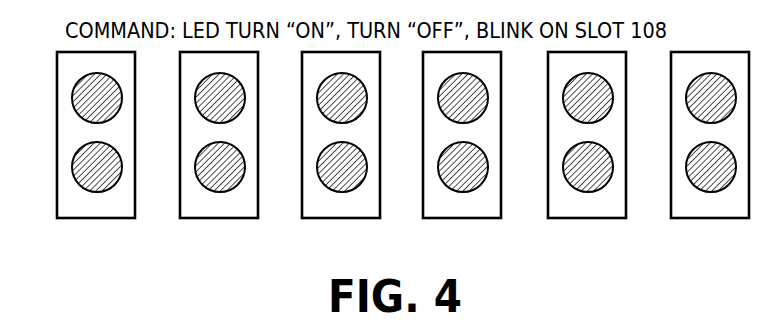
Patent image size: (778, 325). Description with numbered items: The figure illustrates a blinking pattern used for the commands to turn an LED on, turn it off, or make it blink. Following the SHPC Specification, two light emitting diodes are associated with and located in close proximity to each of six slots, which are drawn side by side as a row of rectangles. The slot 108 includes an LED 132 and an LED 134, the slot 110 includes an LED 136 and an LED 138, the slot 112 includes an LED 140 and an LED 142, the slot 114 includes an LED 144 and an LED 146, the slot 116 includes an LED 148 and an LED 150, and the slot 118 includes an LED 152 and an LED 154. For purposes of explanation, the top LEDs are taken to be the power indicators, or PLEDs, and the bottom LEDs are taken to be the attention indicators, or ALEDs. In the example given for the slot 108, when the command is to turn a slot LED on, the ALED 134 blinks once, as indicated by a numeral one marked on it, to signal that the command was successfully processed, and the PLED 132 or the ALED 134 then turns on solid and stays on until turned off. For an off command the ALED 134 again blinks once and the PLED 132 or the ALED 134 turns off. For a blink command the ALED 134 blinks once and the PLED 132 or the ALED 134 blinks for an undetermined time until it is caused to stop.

The slot 108 is at (71, 219).
The slot 110 is at (194, 219).
The slot 112 is at (316, 219).
The slot 114 is at (437, 219).
The slot 116 is at (562, 219).
The slot 118 is at (685, 219).
The LED 132 is at (75, 87).
The LED 134 is at (75, 157).
The LED 136 is at (198, 87).
The LED 138 is at (198, 157).
The LED 140 is at (320, 87).
The LED 142 is at (320, 157).
The LED 144 is at (441, 87).
The LED 146 is at (441, 157).
The LED 148 is at (566, 87).
The LED 150 is at (566, 157).
The LED 152 is at (689, 87).
The LED 154 is at (689, 157).